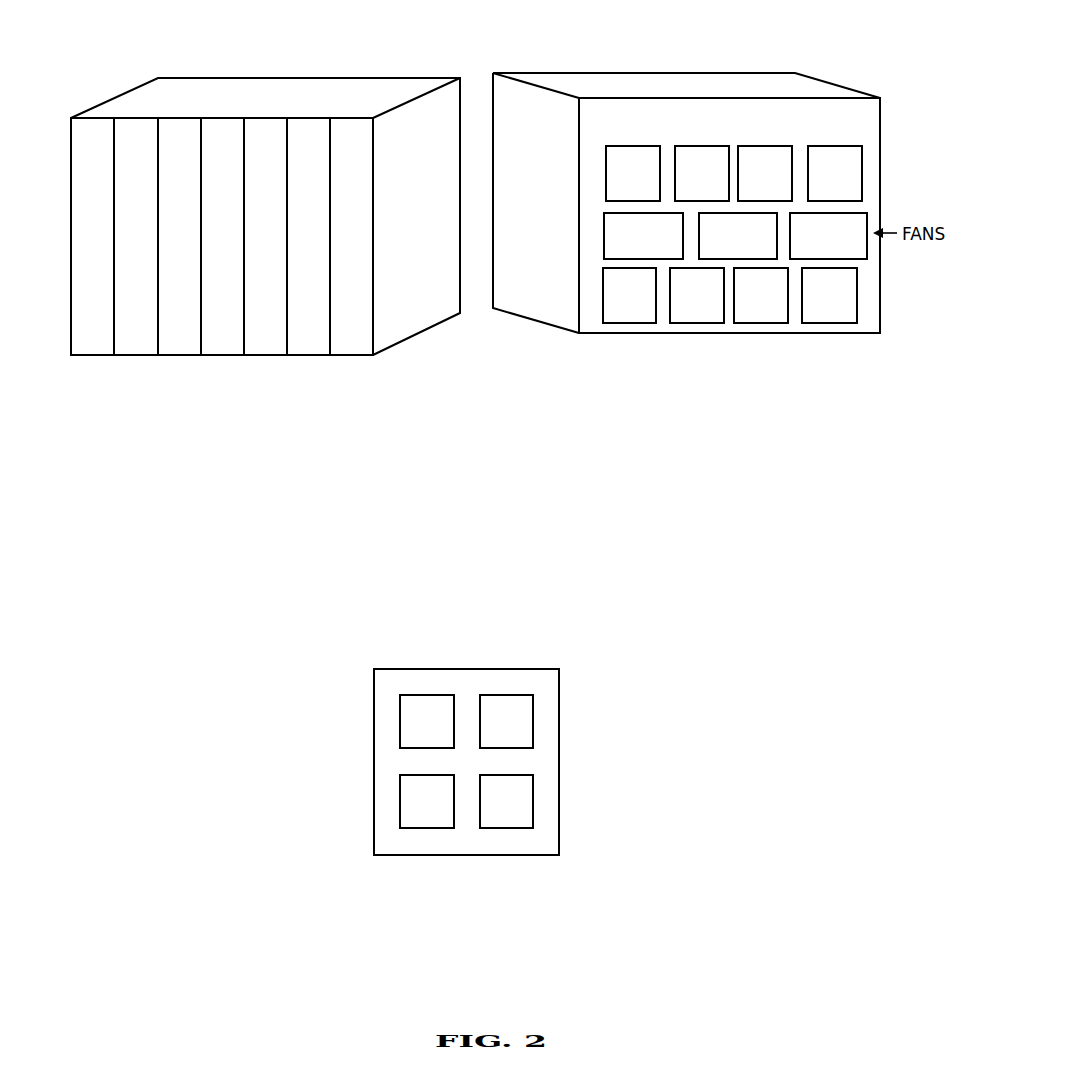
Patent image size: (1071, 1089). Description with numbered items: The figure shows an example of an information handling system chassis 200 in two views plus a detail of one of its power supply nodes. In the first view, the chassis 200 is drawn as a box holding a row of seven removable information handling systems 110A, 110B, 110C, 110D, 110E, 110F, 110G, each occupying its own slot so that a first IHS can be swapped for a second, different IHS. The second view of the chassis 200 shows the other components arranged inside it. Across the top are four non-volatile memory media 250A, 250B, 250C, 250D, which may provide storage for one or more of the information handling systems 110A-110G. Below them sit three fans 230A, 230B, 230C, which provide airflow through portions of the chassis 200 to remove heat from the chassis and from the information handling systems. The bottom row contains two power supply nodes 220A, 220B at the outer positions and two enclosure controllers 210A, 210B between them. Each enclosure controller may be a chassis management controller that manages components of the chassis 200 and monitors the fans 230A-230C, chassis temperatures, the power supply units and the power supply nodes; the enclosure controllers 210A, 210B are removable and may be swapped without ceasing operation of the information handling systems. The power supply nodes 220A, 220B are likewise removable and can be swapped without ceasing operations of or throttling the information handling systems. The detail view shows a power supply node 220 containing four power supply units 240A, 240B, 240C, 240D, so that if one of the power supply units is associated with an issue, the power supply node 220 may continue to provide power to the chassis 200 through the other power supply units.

The information handling system chassis 200 is at (265, 78).
The information handling system 110A is at (93, 355).
The information handling system 110B is at (137, 355).
The information handling system 110C is at (181, 355).
The information handling system 110D is at (223, 355).
The information handling system 110E is at (268, 355).
The information handling system 110F is at (308, 355).
The information handling system 110G is at (355, 355).
The non-volatile memory medium 250A is at (634, 146).
The non-volatile memory medium 250B is at (689, 146).
The non-volatile memory medium 250C is at (765, 146).
The non-volatile memory medium 250D is at (833, 146).
The fan 230A is at (622, 243).
The fan 230B is at (716, 243).
The fan 230C is at (806, 243).
The power supply node 220A is at (628, 323).
The power supply node 220B is at (828, 323).
The enclosure controller 210A is at (698, 323).
The enclosure controller 210B is at (759, 323).
The power supply node 220 is at (466, 855).
The power supply unit 240A is at (400, 719).
The power supply unit 240B is at (533, 722).
The power supply unit 240C is at (533, 800).
The power supply unit 240D is at (400, 798).